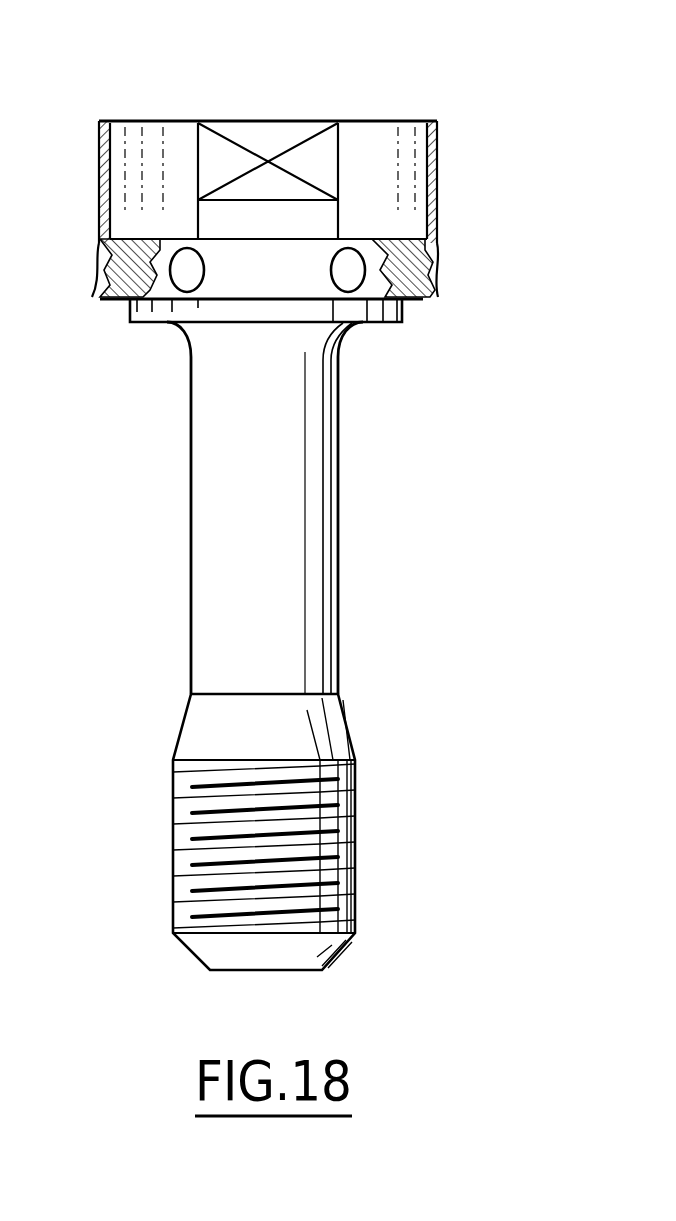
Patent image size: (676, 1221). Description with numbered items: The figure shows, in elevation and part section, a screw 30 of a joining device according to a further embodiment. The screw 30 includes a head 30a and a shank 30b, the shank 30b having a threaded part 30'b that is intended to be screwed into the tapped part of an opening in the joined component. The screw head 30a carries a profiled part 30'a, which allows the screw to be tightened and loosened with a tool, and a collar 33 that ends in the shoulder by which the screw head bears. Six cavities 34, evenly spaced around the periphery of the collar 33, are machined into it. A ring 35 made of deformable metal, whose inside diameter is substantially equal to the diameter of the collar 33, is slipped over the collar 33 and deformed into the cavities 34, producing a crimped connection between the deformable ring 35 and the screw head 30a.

The screw 30 is at (269, 350).
The head 30a is at (307, 248).
The profiled part 30'a is at (268, 141).
The shank 30b is at (310, 503).
The threaded part 30'b is at (321, 832).
The collar 33 is at (372, 247).
The cavities 34 is at (180, 276).
The ring 35 is at (435, 150).